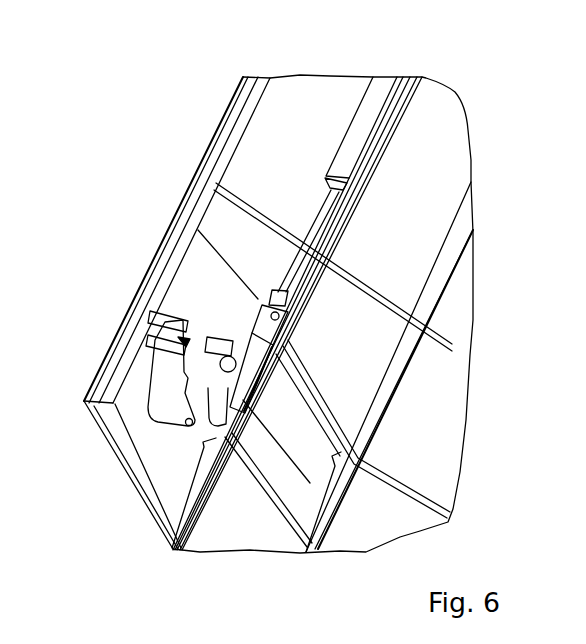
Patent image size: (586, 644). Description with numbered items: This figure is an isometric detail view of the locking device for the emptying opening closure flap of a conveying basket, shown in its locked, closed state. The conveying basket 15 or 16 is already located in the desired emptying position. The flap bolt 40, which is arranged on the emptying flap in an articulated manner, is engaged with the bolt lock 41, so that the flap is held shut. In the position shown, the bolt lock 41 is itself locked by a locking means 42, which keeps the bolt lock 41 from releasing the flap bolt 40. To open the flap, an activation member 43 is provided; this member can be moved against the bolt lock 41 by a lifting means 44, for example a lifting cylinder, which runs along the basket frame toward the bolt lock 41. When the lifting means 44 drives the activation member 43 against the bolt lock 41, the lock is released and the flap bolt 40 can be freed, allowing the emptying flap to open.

The conveying basket 15 is at (251, 313).
The conveying basket 16 is at (248, 182).
The flap bolt 40 is at (285, 482).
The bolt lock 41 is at (161, 410).
The locking means 42 is at (183, 338).
The activation member 43 is at (252, 333).
The lifting means 44 is at (348, 153).